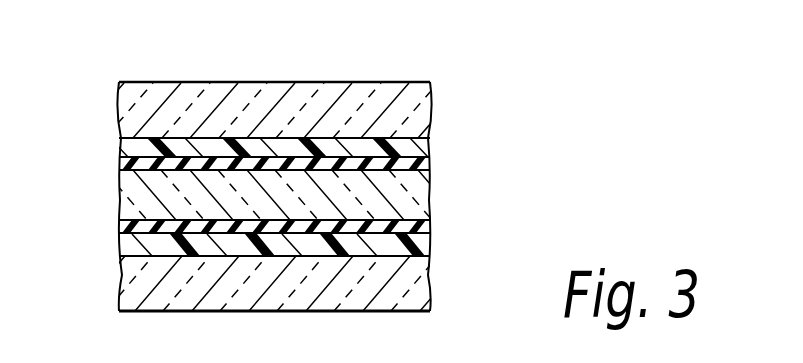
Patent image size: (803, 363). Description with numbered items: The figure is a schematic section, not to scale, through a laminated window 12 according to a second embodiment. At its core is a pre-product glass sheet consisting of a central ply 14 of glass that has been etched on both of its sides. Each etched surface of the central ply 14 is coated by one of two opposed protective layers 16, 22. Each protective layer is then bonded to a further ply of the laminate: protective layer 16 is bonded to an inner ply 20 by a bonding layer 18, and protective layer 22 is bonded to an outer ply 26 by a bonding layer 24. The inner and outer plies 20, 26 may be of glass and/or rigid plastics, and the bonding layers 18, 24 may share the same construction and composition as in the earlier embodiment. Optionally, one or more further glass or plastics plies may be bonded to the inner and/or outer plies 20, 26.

The laminated window 12 is at (297, 194).
The central ply 14 is at (120, 200).
The protective layer 16 is at (430, 163).
The bonding layer 18 is at (120, 153).
The inner ply 20 is at (228, 88).
The protective layer 22 is at (120, 228).
The bonding layer 24 is at (167, 250).
The outer ply 26 is at (303, 288).